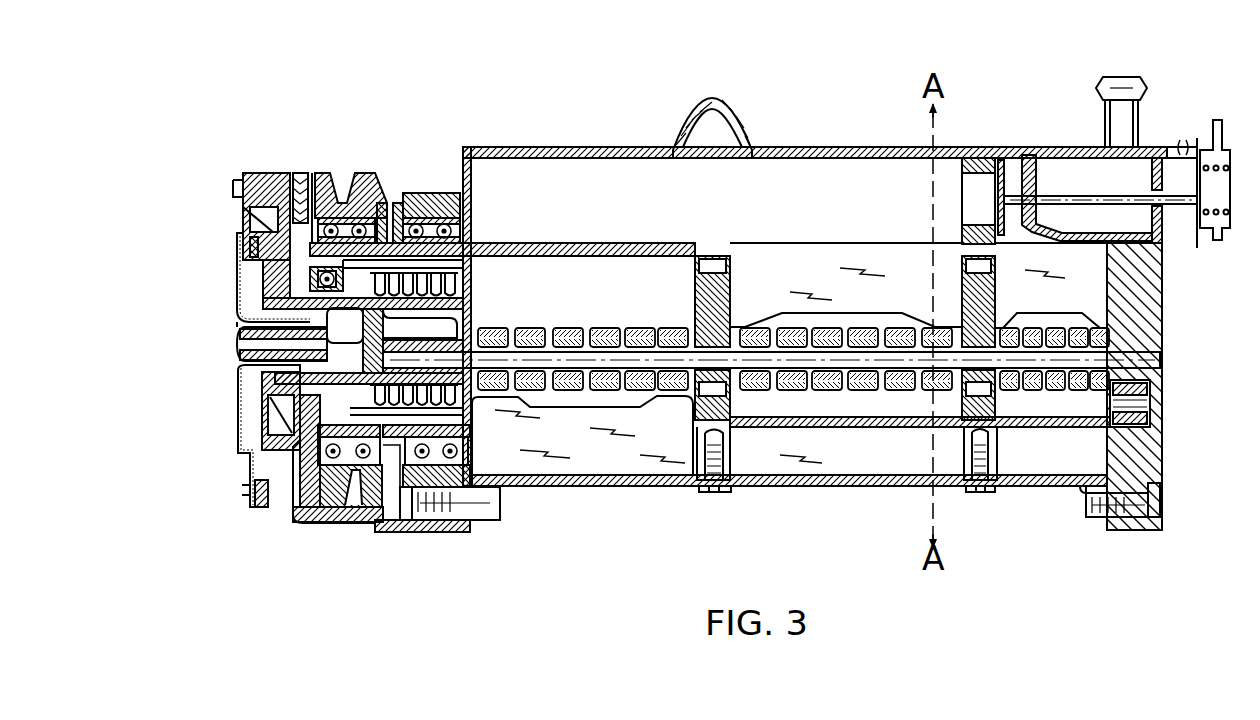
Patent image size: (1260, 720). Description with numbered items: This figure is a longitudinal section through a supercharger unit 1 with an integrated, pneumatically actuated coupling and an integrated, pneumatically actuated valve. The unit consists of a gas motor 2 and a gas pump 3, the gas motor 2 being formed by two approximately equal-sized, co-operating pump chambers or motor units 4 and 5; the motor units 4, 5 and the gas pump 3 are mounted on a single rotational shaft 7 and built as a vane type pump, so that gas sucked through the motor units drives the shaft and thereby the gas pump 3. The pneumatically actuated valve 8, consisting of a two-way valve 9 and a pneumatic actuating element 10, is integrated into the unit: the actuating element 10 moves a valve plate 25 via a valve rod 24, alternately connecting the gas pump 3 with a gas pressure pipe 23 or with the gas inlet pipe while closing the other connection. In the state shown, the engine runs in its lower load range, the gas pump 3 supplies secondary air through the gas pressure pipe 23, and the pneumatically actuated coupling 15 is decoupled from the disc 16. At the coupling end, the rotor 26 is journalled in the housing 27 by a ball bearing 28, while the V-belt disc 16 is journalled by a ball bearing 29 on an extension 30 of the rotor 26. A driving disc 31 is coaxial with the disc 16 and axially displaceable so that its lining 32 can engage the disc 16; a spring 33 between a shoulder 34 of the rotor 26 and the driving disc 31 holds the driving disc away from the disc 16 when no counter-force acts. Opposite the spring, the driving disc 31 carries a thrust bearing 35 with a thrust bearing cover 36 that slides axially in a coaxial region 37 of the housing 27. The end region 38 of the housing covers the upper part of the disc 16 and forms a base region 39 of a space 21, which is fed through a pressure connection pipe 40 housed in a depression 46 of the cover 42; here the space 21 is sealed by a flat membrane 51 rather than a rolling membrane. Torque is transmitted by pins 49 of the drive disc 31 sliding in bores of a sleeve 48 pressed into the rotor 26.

The supercharger unit 1 is at (823, 140).
The gas motor 2 is at (643, 140).
The gas pump 3 is at (1030, 495).
The motor unit 4 is at (588, 450).
The motor unit 5 is at (812, 398).
The rotational shaft 7 is at (704, 356).
The pneumatically actuated valve 8 is at (1147, 122).
The two-way valve 9 is at (1014, 162).
The pneumatic actuating element 10 is at (1217, 120).
The pneumatically actuated coupling 15 is at (300, 150).
The disc 16 is at (362, 172).
The space 21 is at (325, 346).
The gas pressure pipe 23 is at (1104, 92).
The valve rod 24 is at (1038, 196).
The valve plate 25 is at (1000, 160).
The rotor 26 is at (483, 257).
The housing 27 is at (428, 218).
The ball bearing 28 is at (431, 535).
The ball bearing 29 is at (355, 523).
The extension 30 is at (390, 214).
The driving disc 31 is at (291, 172).
The lining 32 is at (301, 173).
The spring 33 is at (445, 272).
The shoulder 34 is at (462, 262).
The thrust bearing 35 is at (343, 270).
The thrust bearing cover 36 is at (238, 240).
The coaxial region 37 is at (460, 320).
The end region 38 is at (290, 524).
The base region 39 is at (340, 317).
The pressure connection pipe 40 is at (252, 350).
The cover 42 is at (238, 413).
The depression 46 is at (257, 361).
The sleeve 48 is at (410, 194).
The pins 49 is at (383, 533).
The flat membrane 51 is at (268, 172).